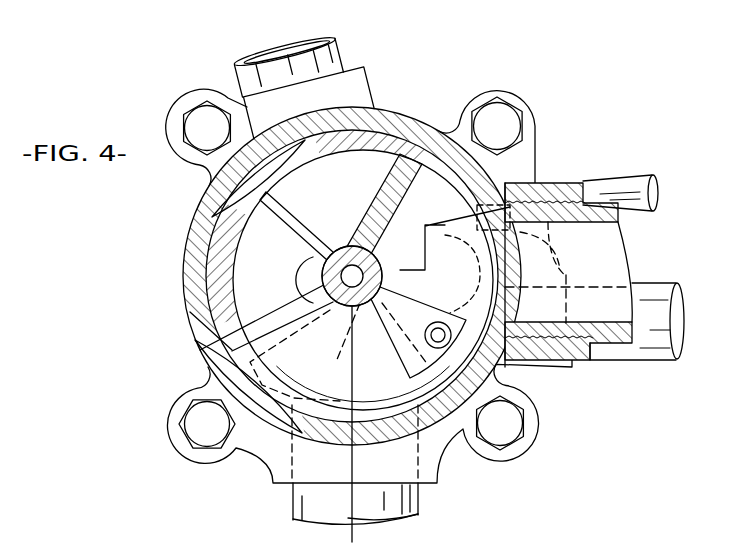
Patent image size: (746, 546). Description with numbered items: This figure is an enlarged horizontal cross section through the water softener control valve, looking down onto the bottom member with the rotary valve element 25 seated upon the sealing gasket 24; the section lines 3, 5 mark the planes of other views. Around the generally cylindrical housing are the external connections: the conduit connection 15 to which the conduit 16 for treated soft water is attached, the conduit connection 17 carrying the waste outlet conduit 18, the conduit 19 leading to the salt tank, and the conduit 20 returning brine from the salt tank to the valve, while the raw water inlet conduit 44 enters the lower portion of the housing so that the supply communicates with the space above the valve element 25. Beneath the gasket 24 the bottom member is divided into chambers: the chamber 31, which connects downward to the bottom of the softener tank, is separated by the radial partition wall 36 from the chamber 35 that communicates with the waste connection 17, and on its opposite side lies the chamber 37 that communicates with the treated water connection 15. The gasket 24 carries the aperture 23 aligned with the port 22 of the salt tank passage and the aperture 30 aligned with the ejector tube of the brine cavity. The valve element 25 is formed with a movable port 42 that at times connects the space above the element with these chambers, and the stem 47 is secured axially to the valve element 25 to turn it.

The section line 3- 3 is at (343, 246).
The section line 5- 5 is at (440, 277).
The conduit connection 15 is at (437, 488).
The conduit 16 is at (297, 505).
The conduit connection 17 is at (364, 90).
The waste outlet conduit 18 is at (338, 44).
The conduit 19 is at (657, 190).
The conduit 20 is at (626, 355).
The port 22 is at (236, 542).
The aperture 23 is at (450, 217).
The sealing gasket 24 is at (489, 542).
The rotary valve element 25 is at (217, 310).
The aperture 30 is at (440, 323).
The chamber 31 is at (314, 279).
The chamber 35 is at (312, 158).
The radial partition wall 36 is at (302, 229).
The chamber 37 is at (352, 345).
The port 42 is at (305, 352).
The raw water inlet conduit 44 is at (612, 253).
The stem 47 is at (381, 262).